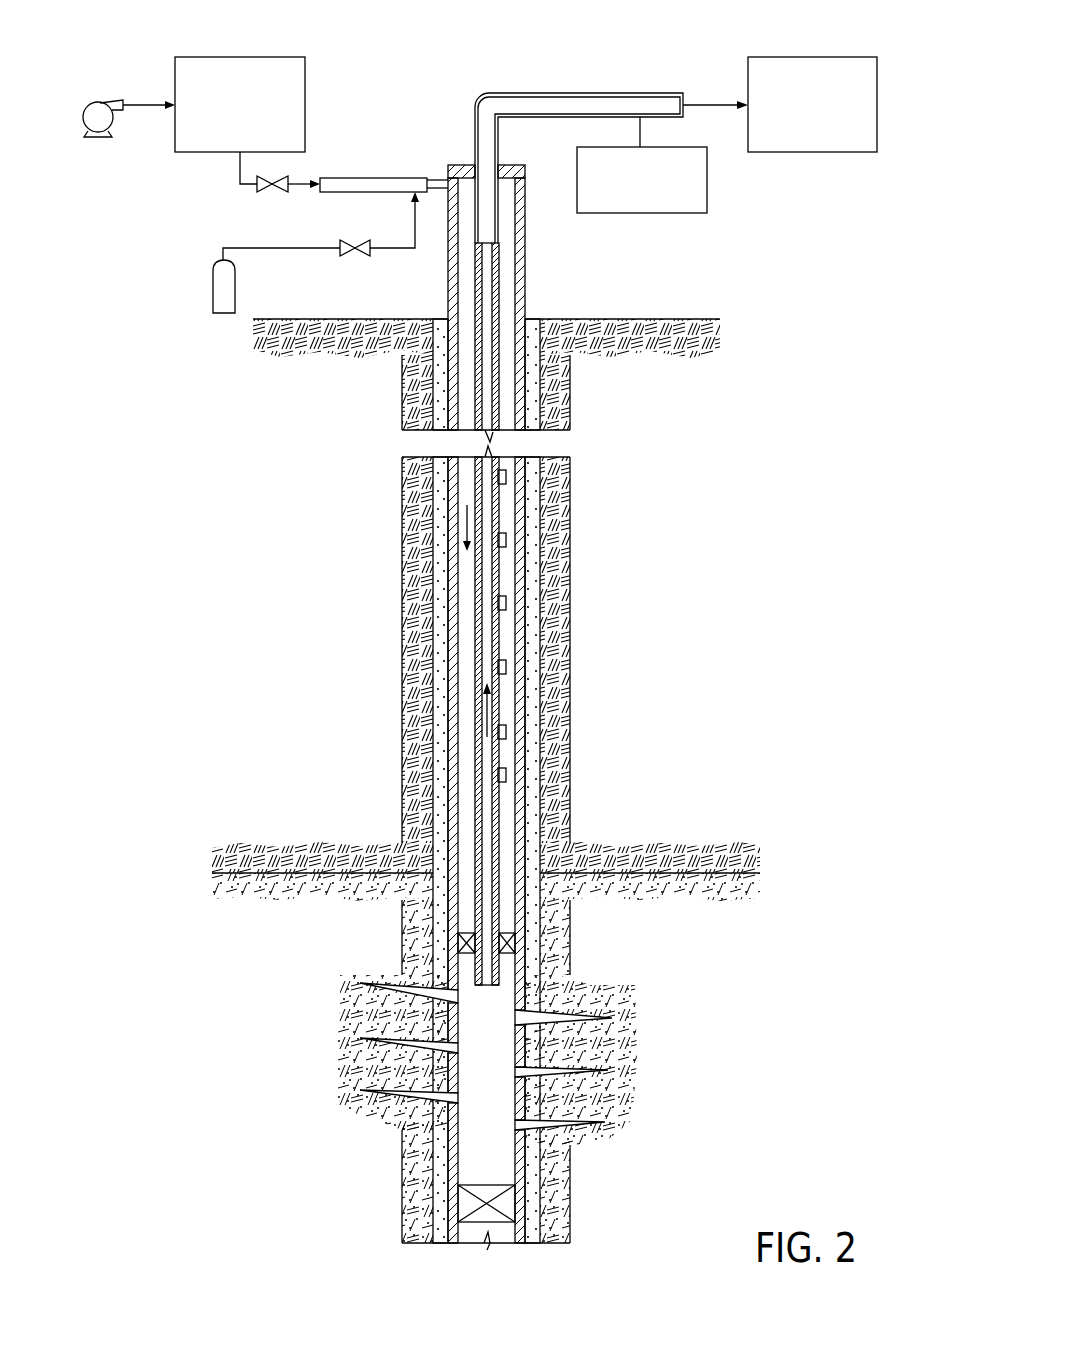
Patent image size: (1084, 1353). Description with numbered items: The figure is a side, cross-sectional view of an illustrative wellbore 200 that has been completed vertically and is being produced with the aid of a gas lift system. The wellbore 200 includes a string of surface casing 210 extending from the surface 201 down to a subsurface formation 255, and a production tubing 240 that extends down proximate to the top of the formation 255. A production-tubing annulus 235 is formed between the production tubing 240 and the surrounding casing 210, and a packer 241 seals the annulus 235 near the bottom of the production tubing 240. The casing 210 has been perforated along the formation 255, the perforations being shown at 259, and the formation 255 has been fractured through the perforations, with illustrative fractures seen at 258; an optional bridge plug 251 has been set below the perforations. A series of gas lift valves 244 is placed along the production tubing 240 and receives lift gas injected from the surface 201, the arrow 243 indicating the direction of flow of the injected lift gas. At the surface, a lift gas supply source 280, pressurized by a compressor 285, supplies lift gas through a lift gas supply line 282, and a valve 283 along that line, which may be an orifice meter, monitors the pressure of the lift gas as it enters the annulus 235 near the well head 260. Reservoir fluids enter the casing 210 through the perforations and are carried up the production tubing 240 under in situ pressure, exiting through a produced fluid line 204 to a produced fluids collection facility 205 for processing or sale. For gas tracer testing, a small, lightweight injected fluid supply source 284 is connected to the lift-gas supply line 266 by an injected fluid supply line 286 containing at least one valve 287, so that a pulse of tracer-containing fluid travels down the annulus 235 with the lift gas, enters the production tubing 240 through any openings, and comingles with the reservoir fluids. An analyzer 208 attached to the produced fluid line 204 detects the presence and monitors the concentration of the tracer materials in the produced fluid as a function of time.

The wellbore 200 is at (790, 422).
The surface 201 is at (652, 318).
The produced fluid line 204 is at (584, 92).
The produced fluids collection facility 205 is at (820, 152).
The analyzer 208 is at (708, 192).
The casing 210 is at (520, 362).
The production-tubing annulus 235 is at (463, 813).
The production tubing 240 is at (498, 397).
The packer 241 is at (458, 942).
The arrow 243 is at (487, 720).
The gas lift valves 244 is at (506, 603).
The bridge plug 251 is at (505, 1208).
The subsurface formation 255 is at (813, 1102).
The fractures 258 is at (565, 1020).
The perforations 259 is at (596, 1120).
The well head 260 is at (546, 281).
The lift-gas supply line 266 is at (372, 178).
The lift gas supply source 280 is at (307, 77).
The lift gas supply line 282 is at (238, 170).
The valve 283 is at (272, 192).
The injected fluid supply source 284 is at (212, 290).
The compressor 285 is at (100, 100).
The injected fluid supply line 286 is at (282, 247).
The valve 287 is at (346, 252).